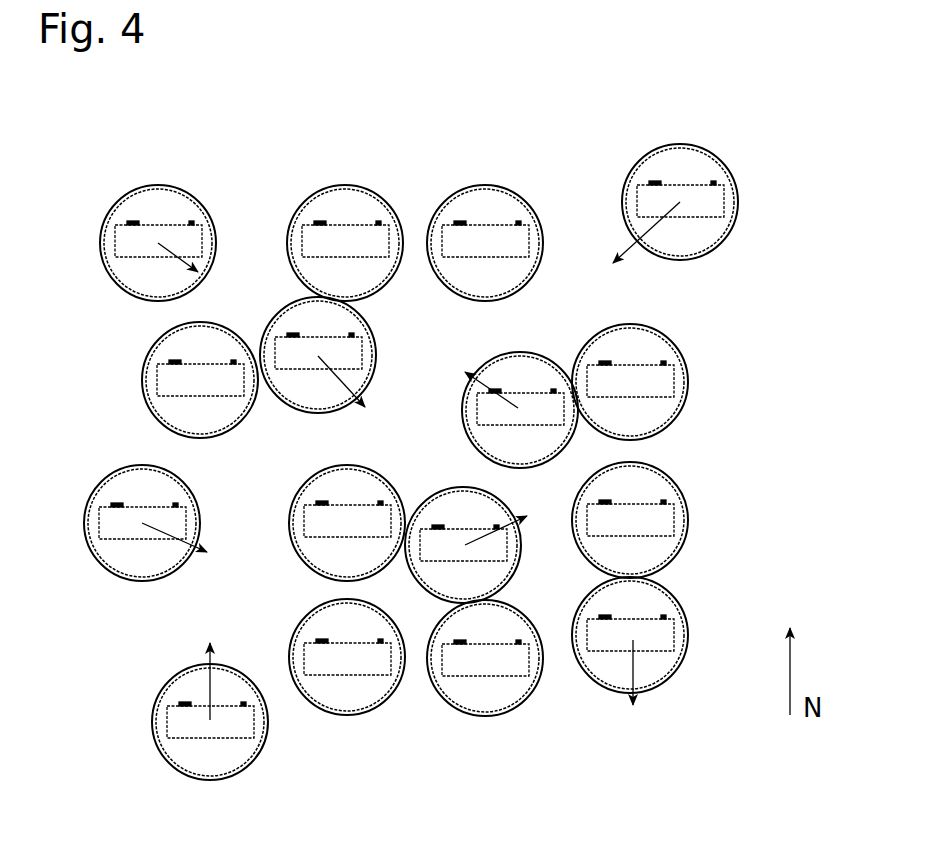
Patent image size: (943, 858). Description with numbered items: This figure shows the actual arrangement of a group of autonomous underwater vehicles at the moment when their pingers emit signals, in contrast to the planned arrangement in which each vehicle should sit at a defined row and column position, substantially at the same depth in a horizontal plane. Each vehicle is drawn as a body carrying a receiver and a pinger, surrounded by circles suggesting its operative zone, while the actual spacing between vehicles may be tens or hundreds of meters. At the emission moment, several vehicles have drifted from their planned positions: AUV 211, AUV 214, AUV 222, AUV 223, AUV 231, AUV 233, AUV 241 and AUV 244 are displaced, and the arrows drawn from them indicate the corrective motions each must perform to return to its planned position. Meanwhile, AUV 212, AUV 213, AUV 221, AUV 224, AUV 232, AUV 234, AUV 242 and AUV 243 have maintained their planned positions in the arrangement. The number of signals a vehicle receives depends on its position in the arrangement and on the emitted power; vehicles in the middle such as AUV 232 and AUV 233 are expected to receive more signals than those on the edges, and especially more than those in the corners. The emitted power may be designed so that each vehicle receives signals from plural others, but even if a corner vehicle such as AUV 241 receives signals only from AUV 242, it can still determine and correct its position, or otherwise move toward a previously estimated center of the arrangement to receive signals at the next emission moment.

The AUV 211 is at (160, 186).
The AUV 212 is at (347, 186).
The AUV 213 is at (487, 186).
The AUV 214 is at (733, 185).
The AUV 221 is at (147, 368).
The AUV 222 is at (377, 345).
The AUV 223 is at (520, 352).
The AUV 224 is at (688, 375).
The AUV 231 is at (85, 517).
The AUV 232 is at (305, 483).
The AUV 233 is at (450, 488).
The AUV 234 is at (687, 512).
The AUV 241 is at (157, 742).
The AUV 242 is at (335, 715).
The AUV 243 is at (498, 717).
The AUV 244 is at (660, 683).